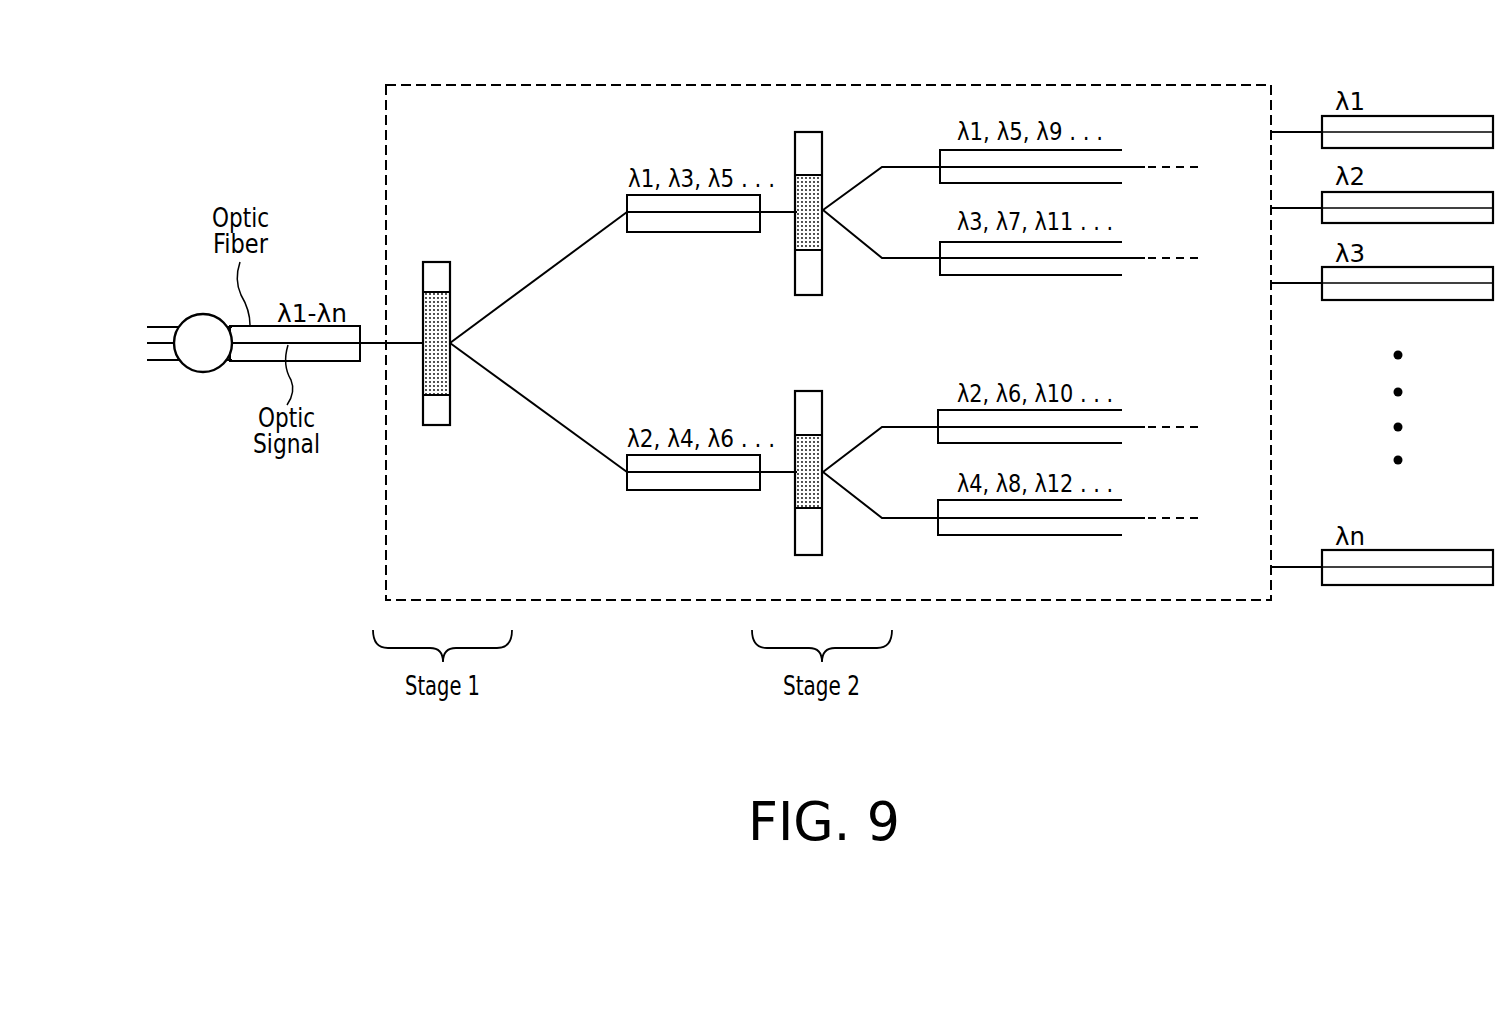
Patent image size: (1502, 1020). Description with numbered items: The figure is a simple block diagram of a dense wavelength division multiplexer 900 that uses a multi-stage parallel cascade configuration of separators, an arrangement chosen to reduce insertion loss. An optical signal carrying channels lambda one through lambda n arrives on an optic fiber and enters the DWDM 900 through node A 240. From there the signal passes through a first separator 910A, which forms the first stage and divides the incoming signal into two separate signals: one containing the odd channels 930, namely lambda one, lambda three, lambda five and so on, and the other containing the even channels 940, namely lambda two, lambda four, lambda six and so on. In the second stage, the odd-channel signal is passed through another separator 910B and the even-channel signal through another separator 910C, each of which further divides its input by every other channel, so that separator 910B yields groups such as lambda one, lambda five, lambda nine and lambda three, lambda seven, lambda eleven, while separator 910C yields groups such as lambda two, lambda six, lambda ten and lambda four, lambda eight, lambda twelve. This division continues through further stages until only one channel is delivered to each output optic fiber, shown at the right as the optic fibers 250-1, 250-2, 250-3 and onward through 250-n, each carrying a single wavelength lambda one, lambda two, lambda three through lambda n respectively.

The dense wavelength division multiplexer 900 is at (1115, 83).
The node A 240 is at (195, 373).
The separator 910A is at (433, 262).
The odd channels signal 930 is at (645, 232).
The separator 910B is at (795, 270).
The even channels signal 940 is at (645, 490).
The separator 910C is at (795, 528).
The optic fiber 250-1 is at (1407, 116).
The optic fiber 250-2 is at (1407, 192).
The optic fiber 250-3 is at (1407, 267).
The optic fiber 250-n is at (1407, 550).